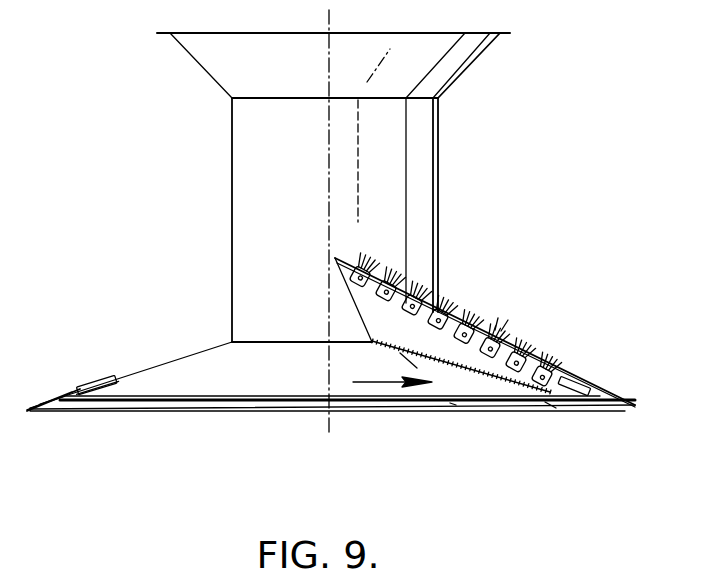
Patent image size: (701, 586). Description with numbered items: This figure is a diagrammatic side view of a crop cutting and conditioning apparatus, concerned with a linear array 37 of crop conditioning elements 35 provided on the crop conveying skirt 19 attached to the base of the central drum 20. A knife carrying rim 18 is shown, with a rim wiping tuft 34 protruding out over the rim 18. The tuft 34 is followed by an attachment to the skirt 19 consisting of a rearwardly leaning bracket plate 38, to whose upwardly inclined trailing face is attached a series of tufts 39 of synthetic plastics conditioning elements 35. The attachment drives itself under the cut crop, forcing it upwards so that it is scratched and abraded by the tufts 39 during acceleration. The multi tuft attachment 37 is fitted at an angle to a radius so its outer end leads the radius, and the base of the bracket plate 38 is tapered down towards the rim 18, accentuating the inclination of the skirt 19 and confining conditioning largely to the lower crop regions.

The knife carrying rim 18 is at (222, 406).
The crop conveying skirt 19 is at (275, 374).
The central drum 20 is at (437, 189).
The rim wiping tuft 34 is at (84, 386).
The crop conditioning elements 35 is at (352, 249).
The linear array of crop conditioning elements 37 is at (490, 306).
The bracket plate 38 is at (477, 377).
The tufts 39 is at (498, 329).